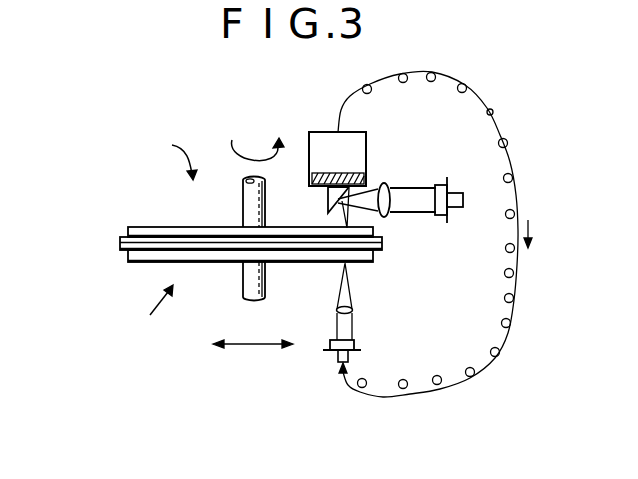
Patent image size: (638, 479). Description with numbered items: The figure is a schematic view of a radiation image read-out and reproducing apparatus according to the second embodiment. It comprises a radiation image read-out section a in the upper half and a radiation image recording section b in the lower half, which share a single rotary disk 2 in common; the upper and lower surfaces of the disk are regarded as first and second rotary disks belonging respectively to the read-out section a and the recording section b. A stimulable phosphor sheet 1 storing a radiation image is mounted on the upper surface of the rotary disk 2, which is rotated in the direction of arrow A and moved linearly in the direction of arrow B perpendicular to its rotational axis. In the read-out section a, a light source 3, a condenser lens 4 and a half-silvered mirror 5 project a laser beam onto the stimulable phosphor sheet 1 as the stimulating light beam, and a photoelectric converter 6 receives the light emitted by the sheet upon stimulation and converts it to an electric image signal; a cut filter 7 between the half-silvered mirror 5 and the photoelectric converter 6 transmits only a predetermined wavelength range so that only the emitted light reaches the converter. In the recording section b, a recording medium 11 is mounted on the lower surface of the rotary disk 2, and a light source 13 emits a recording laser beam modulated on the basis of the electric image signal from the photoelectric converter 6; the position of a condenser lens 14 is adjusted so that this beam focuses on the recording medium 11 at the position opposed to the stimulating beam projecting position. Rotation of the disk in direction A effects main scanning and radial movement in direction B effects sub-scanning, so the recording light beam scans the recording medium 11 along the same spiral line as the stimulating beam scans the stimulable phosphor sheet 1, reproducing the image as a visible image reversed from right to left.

The stimulable phosphor sheet 1 is at (171, 227).
The rotary disk 2 is at (120, 244).
The recording medium 11 is at (205, 262).
The light source 3 is at (440, 216).
The condenser lens 4 is at (390, 183).
The half-silvered mirror 5 is at (328, 197).
The photoelectric converter 6 is at (363, 143).
The cut filter 7 is at (309, 177).
The light source 13 is at (356, 348).
The condenser lens 14 is at (355, 310).
The direction of rotation A is at (258, 153).
The direction of linear movement B is at (253, 344).
The radiation image read-out section a is at (174, 156).
The radiation image recording section b is at (153, 310).